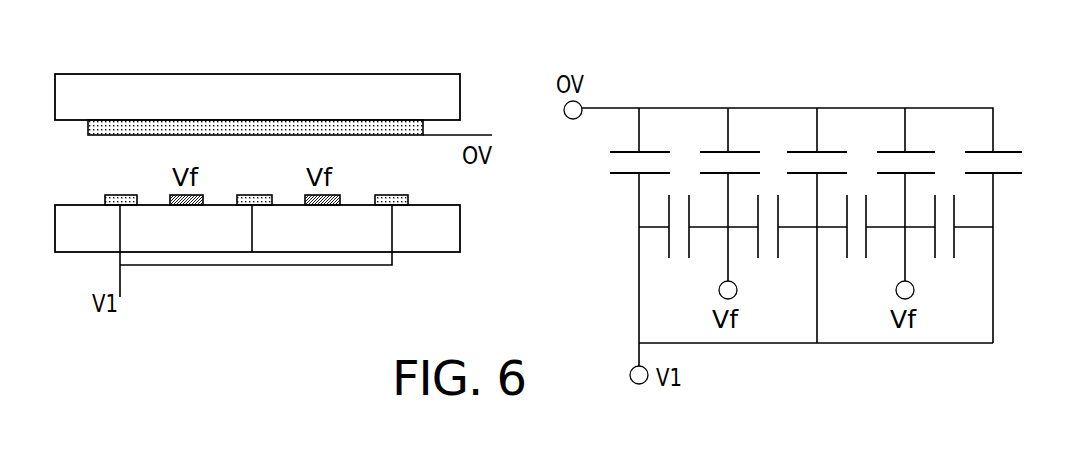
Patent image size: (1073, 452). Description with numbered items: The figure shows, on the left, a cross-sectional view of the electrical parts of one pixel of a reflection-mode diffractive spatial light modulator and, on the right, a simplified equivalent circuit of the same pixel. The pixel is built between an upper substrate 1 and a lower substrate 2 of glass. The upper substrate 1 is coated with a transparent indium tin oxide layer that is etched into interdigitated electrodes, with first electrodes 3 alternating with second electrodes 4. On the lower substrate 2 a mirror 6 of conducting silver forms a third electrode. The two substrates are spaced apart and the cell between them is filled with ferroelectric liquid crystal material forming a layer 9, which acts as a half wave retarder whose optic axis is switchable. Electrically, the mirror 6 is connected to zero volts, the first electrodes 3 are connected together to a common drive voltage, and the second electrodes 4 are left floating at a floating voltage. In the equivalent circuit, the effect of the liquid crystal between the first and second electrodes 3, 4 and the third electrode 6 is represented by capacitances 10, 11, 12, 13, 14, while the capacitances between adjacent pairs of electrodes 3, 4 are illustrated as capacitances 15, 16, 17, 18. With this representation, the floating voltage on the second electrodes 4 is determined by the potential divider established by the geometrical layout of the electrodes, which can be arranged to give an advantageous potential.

The upper substrate 1 is at (428, 238).
The lower substrate 2 is at (154, 91).
The first electrodes 3 is at (106, 195).
The second electrodes 4 is at (190, 205).
The mirror 6 is at (315, 130).
The ferroelectric liquid crystal layer 9 is at (146, 181).
The capacitance 10 is at (624, 152).
The capacitance 11 is at (713, 152).
The capacitance 12 is at (802, 152).
The capacitance 13 is at (890, 152).
The capacitance 14 is at (986, 152).
The capacitance 15 is at (679, 258).
The capacitance 16 is at (770, 258).
The capacitance 17 is at (851, 262).
The capacitance 18 is at (942, 258).